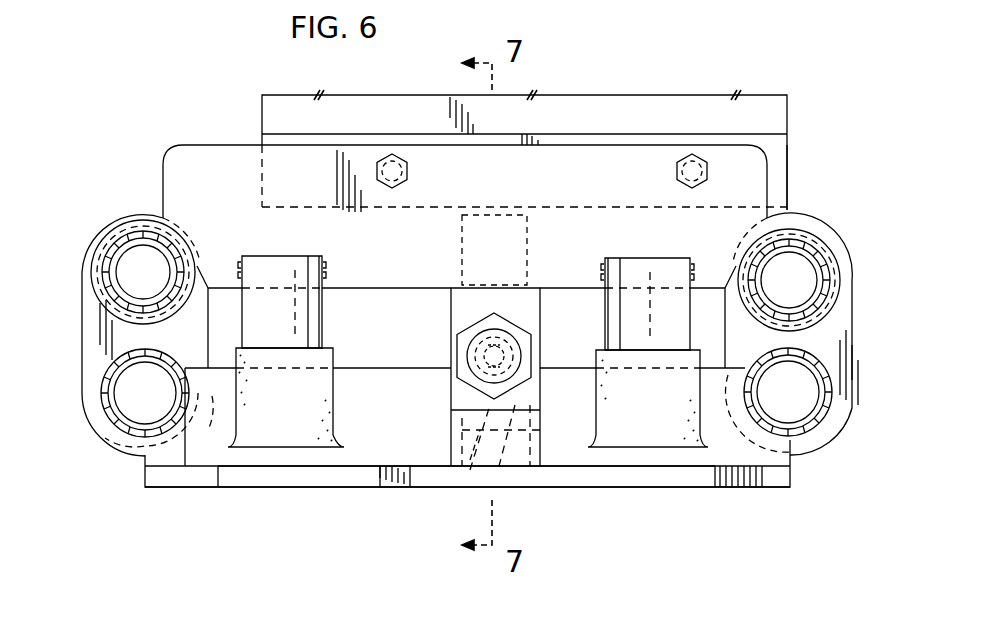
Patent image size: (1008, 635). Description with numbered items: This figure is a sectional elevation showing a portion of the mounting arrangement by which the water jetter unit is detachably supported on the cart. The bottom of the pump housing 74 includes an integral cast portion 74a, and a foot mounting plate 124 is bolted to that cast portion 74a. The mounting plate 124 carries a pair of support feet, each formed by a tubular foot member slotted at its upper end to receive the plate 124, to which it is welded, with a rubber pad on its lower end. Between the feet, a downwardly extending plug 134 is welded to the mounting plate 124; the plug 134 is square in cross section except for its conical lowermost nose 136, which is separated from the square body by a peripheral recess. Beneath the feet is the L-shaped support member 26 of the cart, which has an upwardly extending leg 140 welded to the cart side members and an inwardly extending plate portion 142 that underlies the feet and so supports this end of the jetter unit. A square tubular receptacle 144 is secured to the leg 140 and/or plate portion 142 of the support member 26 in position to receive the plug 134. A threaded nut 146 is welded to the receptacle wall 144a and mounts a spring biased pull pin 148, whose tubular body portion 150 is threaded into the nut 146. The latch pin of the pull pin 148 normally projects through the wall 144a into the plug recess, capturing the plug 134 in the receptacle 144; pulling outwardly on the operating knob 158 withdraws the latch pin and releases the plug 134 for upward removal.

The L-shaped support member 26 is at (345, 487).
The pump housing 74 is at (622, 95).
The integral cast portion 74a is at (785, 175).
The foot mounting plate 124 is at (206, 155).
The plug 134 is at (468, 262).
The nose 136 is at (470, 460).
The upwardly extending leg 140 is at (208, 430).
The plate portion 142 is at (390, 478).
The square tubular receptacle 144 is at (451, 424).
The receptacle wall 144a is at (515, 450).
The threaded nut 146 is at (497, 320).
The spring biased pull pin 148 is at (455, 341).
The tubular body portion 150 is at (522, 300).
The operating knob 158 is at (467, 322).